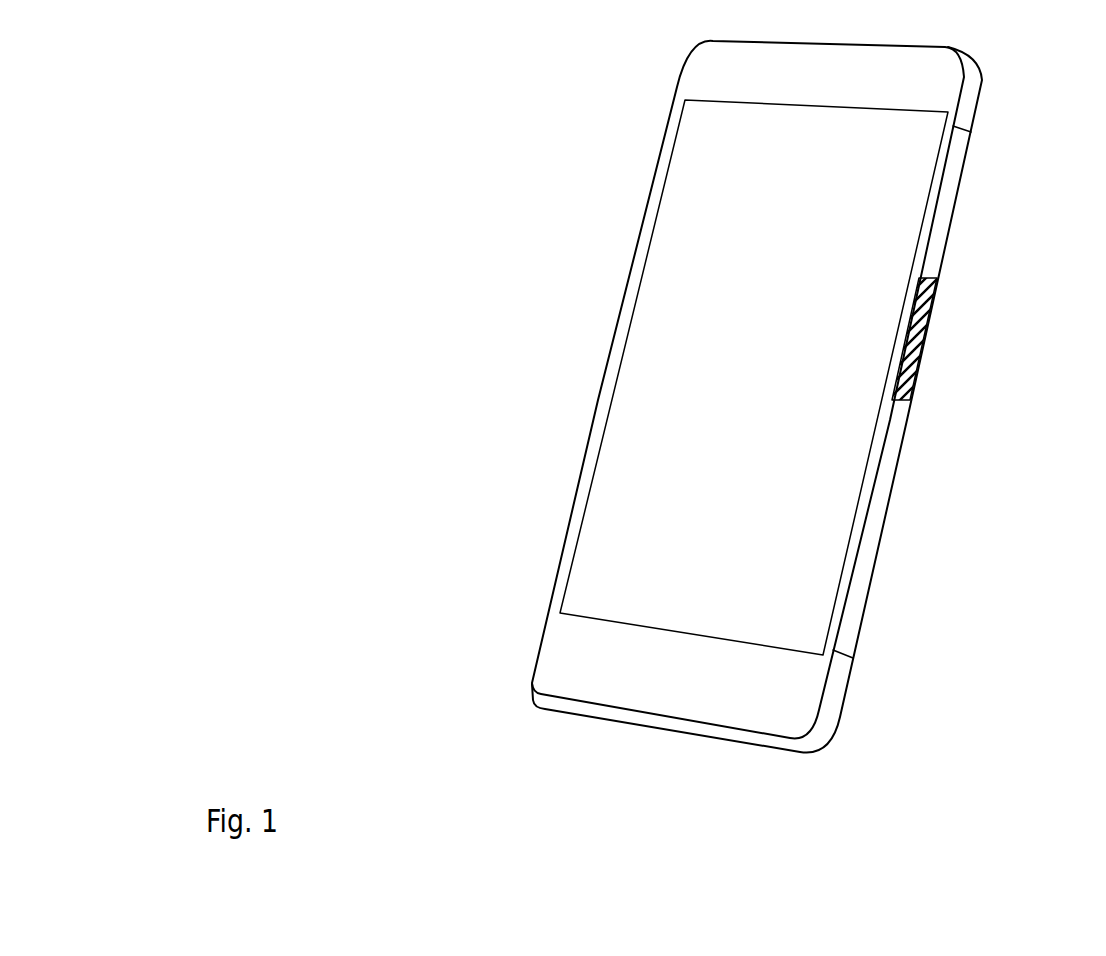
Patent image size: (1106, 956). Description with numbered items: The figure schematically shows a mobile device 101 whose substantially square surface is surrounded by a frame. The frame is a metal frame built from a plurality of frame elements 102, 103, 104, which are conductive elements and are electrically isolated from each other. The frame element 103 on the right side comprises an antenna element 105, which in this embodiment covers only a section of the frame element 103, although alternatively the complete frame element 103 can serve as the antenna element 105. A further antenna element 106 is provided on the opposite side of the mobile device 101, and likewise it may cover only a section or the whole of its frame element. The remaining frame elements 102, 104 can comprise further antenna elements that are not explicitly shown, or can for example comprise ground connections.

The mobile device 101 is at (923, 72).
The frame element 102 is at (983, 82).
The frame element 103 is at (966, 160).
The frame element 104 is at (847, 690).
The antenna element 105 is at (925, 340).
The further antenna element 106 is at (620, 312).